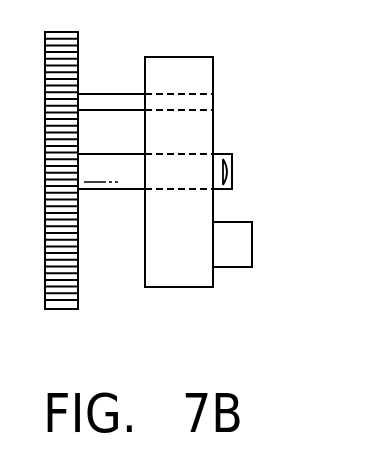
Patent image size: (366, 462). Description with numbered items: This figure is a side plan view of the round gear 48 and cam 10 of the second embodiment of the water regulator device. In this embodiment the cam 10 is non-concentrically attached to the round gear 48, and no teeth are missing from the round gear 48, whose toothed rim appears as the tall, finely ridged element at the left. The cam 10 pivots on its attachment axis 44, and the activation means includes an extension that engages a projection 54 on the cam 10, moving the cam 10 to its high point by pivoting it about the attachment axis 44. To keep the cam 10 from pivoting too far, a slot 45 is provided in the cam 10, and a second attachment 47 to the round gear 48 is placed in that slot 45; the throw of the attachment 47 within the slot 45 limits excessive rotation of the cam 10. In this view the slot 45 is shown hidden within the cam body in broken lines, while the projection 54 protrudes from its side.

The cam 10 is at (213, 140).
The attachment axis 44 is at (107, 190).
The slot 45 is at (178, 94).
The second attachment 47 is at (113, 94).
The knurled knob 48 is at (45, 295).
The projection 54 is at (230, 240).